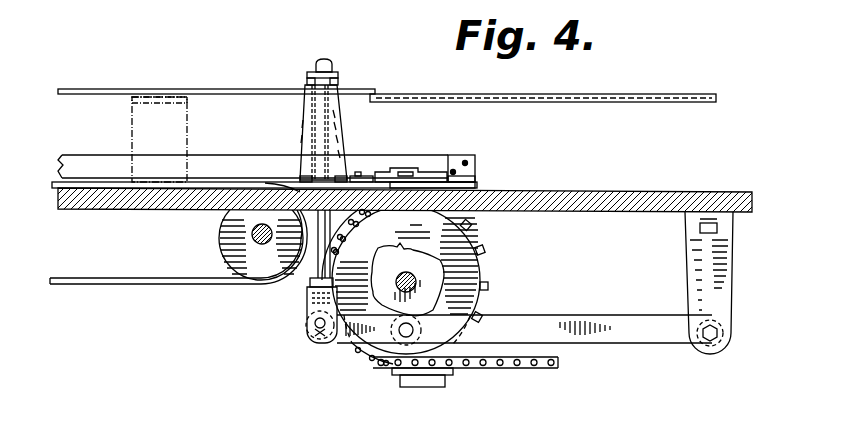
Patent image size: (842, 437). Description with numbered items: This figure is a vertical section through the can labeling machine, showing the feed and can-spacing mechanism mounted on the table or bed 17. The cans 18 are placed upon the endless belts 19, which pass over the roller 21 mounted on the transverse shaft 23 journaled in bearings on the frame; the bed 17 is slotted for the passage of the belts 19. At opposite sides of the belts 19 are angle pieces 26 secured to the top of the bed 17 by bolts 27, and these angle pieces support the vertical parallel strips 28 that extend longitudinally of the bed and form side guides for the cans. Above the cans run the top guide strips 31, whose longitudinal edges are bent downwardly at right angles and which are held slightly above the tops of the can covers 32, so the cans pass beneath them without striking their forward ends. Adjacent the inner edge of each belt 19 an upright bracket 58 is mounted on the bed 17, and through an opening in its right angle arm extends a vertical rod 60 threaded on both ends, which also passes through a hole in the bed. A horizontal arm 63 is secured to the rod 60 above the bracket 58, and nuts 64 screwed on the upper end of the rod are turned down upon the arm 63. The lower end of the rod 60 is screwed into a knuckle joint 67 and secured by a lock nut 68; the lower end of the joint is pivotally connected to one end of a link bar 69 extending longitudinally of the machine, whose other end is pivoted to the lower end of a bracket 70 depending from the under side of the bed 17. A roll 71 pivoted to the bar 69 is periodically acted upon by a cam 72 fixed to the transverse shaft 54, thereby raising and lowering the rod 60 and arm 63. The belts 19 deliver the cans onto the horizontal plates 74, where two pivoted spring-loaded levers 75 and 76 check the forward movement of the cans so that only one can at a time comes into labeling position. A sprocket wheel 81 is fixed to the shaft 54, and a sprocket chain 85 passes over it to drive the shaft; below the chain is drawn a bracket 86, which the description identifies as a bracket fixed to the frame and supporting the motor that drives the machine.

The table or bed 17 is at (642, 192).
The cans 18 is at (140, 122).
The endless belts 19 is at (128, 284).
The roller 21 is at (227, 250).
The transverse shaft 23 is at (252, 232).
The angle pieces 26 is at (473, 168).
The bolts 27 is at (475, 183).
The vertical parallel strips 28 is at (77, 163).
The top guide strips 31 is at (639, 93).
The can covers 32 is at (157, 102).
The transverse shaft 54 is at (407, 273).
The upright bracket 58 is at (343, 130).
The vertical rod 60 is at (318, 268).
The horizontal arm 63 is at (339, 75).
The nuts 64 is at (328, 63).
The knuckle joints 67 is at (310, 317).
The lock nuts 68 is at (310, 288).
The link bars 69 is at (577, 315).
The brackets 70 is at (692, 265).
The roll 71 is at (368, 362).
The cams 72 is at (397, 247).
The horizontal plates 74 is at (430, 182).
The lever 75 is at (362, 176).
The lever 76 is at (403, 172).
The sprocket wheel 81 is at (480, 245).
The sprocket chain 85 is at (522, 370).
The bracket block 86 is at (425, 377).